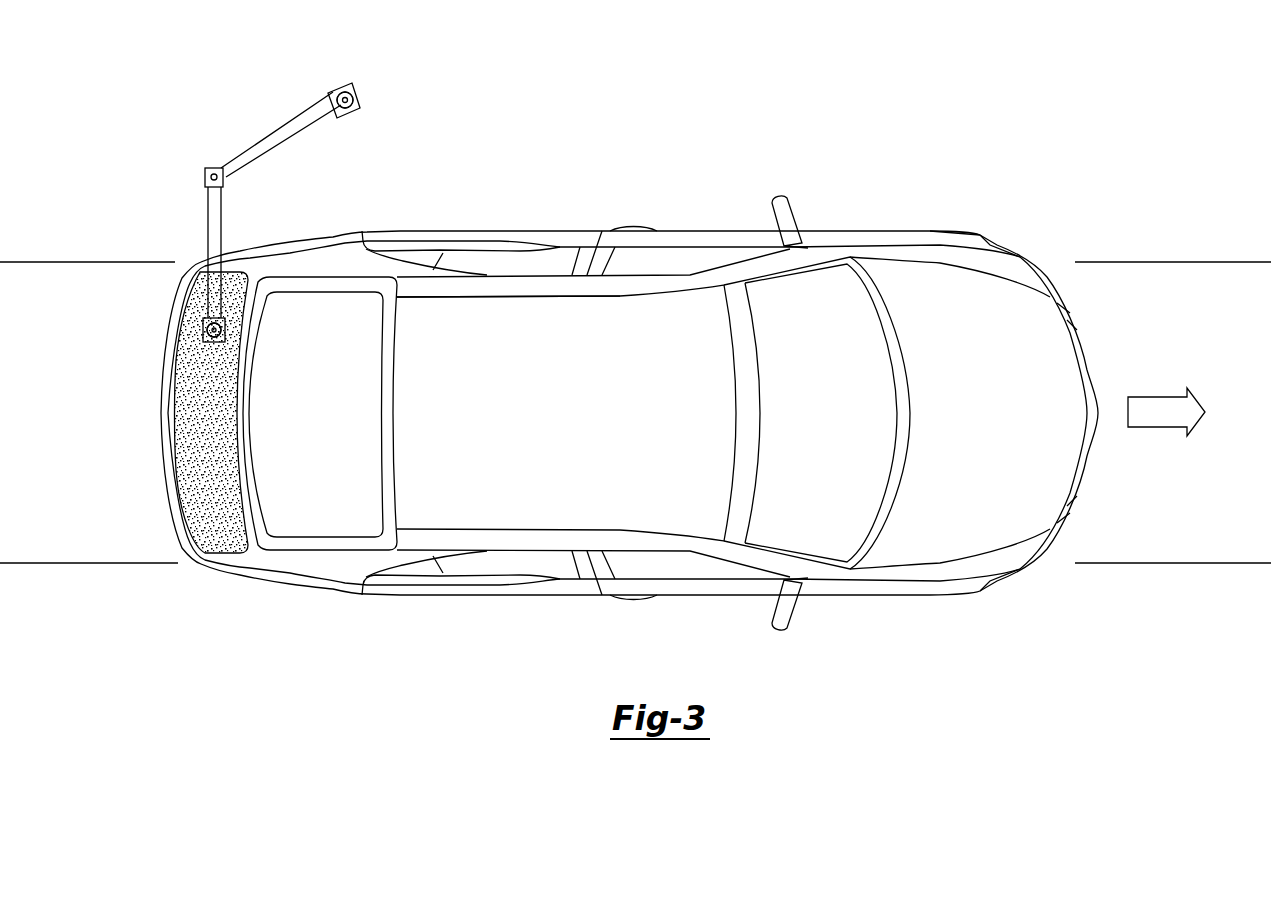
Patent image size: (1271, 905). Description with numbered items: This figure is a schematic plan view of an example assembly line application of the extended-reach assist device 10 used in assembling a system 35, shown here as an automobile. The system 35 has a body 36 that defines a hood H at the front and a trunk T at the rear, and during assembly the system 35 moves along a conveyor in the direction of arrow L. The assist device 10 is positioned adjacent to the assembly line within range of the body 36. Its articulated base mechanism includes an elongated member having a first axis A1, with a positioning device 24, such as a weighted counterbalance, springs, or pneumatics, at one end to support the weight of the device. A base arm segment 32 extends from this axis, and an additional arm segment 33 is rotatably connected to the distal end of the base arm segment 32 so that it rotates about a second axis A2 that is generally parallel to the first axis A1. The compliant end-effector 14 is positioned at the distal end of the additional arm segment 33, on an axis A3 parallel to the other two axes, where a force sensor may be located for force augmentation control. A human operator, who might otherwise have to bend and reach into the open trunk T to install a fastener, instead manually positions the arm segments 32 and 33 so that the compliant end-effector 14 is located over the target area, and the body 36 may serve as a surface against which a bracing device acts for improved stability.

The extended-reach assist device 10 is at (138, 137).
The compliant end-effector 14 is at (207, 332).
The positioning device 24 is at (358, 98).
The base arm segment 32 is at (280, 133).
The additional arm segment 33 is at (221, 212).
The system 35 is at (922, 198).
The body 36 is at (540, 230).
The first axis A1 is at (343, 92).
The second axis A2 is at (205, 177).
The axis A3 is at (207, 328).
The hood H is at (1040, 353).
The trunk T is at (186, 449).
The direction of conveyor movement L is at (1166, 412).